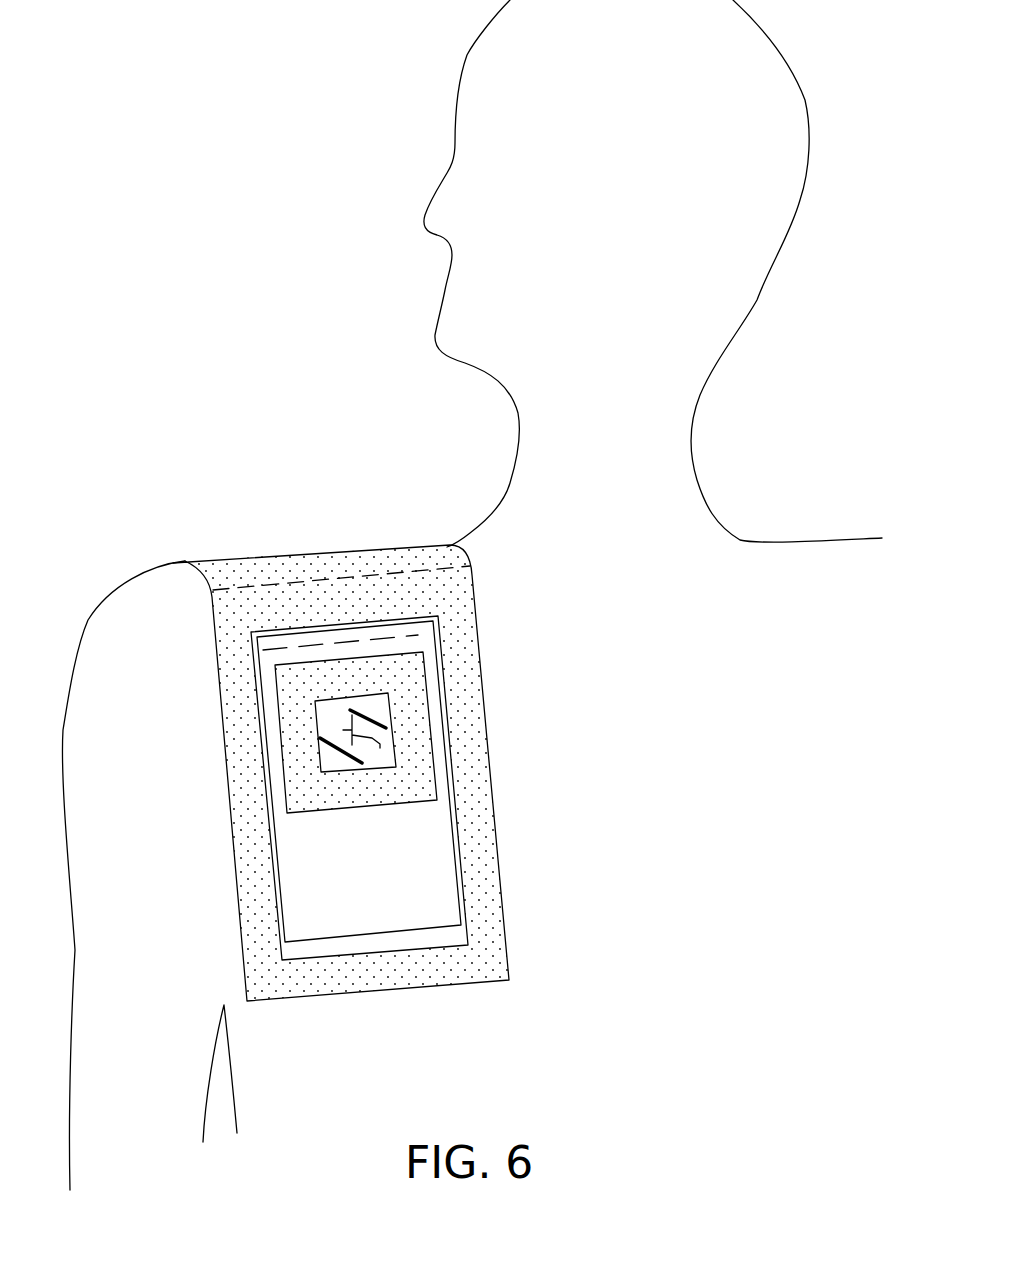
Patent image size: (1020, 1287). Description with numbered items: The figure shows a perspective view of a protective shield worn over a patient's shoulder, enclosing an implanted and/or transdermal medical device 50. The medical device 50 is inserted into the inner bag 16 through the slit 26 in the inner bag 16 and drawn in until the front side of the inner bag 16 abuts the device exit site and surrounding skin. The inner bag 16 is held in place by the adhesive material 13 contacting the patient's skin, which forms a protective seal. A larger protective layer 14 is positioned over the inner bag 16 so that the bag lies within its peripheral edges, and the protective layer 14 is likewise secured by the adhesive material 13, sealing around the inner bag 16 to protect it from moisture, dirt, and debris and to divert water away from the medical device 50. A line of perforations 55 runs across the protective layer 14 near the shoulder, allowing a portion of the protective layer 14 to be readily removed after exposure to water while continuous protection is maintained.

The protective layer 14 is at (306, 540).
The line of perforations 55 is at (260, 585).
The slit 26 is at (392, 733).
The adhesive material 13 is at (297, 743).
The medical device 50 is at (387, 740).
The inner bag 16 is at (403, 873).